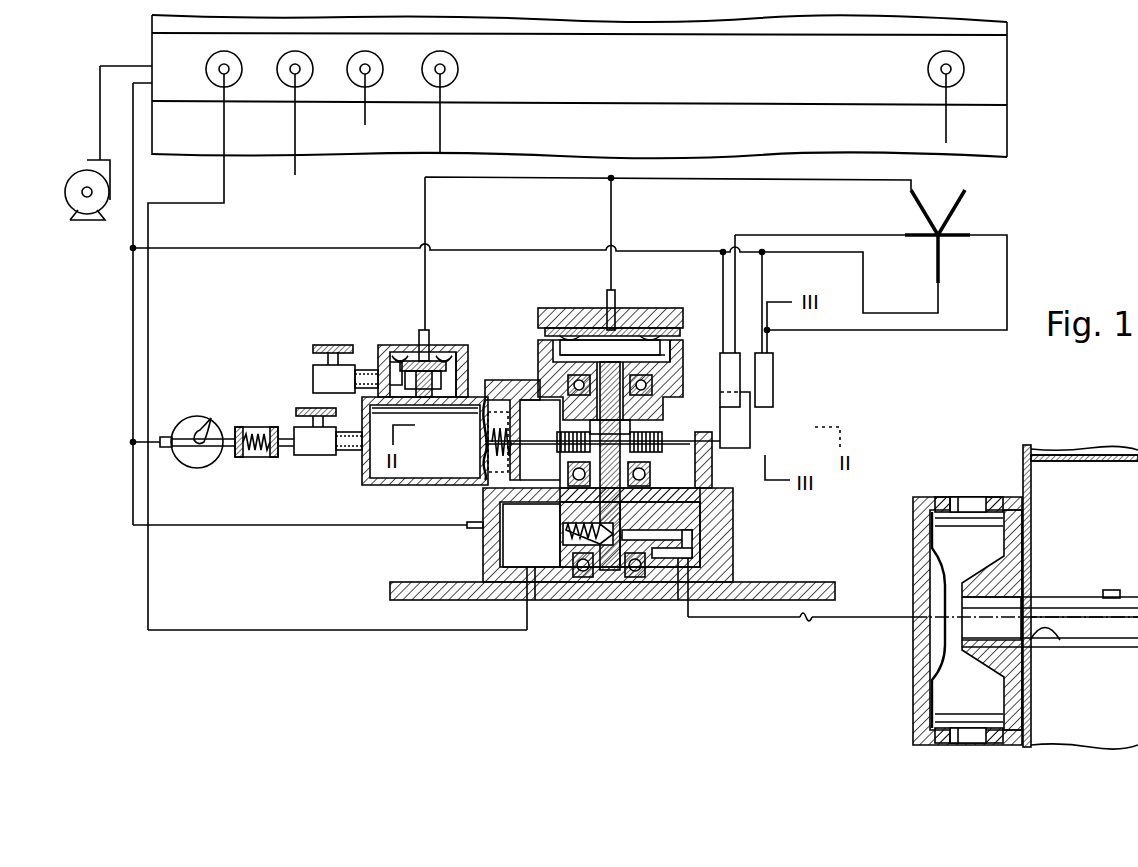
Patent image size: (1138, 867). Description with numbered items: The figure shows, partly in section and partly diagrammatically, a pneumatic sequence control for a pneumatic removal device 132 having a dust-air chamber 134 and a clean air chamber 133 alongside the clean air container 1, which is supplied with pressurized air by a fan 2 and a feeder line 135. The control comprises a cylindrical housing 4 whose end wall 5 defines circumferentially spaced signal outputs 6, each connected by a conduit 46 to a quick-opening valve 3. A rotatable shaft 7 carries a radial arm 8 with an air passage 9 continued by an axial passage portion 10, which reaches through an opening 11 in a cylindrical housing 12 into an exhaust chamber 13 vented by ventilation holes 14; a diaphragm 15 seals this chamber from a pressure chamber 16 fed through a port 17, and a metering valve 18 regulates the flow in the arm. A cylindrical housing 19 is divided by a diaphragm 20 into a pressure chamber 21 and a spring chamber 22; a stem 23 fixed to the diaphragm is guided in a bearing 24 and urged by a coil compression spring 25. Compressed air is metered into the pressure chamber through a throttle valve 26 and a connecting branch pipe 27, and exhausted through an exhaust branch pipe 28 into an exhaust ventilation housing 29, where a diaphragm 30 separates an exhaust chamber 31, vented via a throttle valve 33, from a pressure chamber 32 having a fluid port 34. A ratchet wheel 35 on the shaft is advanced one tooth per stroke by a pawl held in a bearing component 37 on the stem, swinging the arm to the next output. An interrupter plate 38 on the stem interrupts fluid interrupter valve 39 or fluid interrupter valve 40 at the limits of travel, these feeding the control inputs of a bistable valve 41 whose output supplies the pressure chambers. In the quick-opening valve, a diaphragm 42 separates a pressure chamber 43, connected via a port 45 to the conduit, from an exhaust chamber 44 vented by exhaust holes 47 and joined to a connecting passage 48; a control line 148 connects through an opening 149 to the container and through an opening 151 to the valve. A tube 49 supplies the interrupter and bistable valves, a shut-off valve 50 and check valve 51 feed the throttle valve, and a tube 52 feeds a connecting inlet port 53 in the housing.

The clean air container 1 is at (574, 73).
The fan 2 is at (87, 218).
The quick-opening valve 3 is at (240, 71).
The housing 4 is at (732, 508).
The end wall 5 is at (650, 601).
The signal outputs 6 is at (526, 596).
The rotatable shaft 7 is at (652, 474).
The radial arm 8 is at (716, 545).
The air passage 9 is at (710, 564).
The axial passage portion 10 is at (566, 468).
The opening 11 is at (665, 350).
The cylindrical housing 12 is at (545, 323).
The exhaust chamber 13 is at (582, 336).
The ventilation holes 14 is at (545, 370).
The diaphragm 15 is at (640, 340).
The pressure chamber 16 is at (675, 330).
The port 17 is at (616, 318).
The metering valve 18 is at (562, 530).
The cylindrical housing 19 is at (455, 486).
The diaphragm 20 is at (490, 442).
The pressure chamber 21 is at (415, 486).
The spring chamber 22 is at (483, 412).
The stem 23 is at (528, 390).
The bearing 24 is at (712, 470).
The coil compression spring 25 is at (484, 455).
The throttle valve 26 is at (315, 456).
The connecting branch pipe 27 is at (345, 453).
The exhaust branch pipe 28 is at (400, 365).
The exhaust ventilation housing 29 is at (470, 385).
The diaphragm 30 is at (448, 353).
The exhaust chamber 31 is at (378, 352).
The pressure chamber 32 is at (416, 356).
The throttle valve 33 is at (320, 370).
The fluid port 34 is at (429, 345).
The ratchet wheel 35 is at (650, 440).
The bearing component 37 is at (590, 440).
The interrupter plate 38 is at (740, 432).
The fluid interrupter valve 39 is at (765, 371).
The fluid interrupter valve 40 is at (727, 366).
The bistable valve 41 is at (988, 225).
The diaphragm 42 is at (940, 572).
The pressure chamber 43 is at (926, 660).
The exhaust chamber 44 is at (1000, 545).
The port 45 is at (920, 622).
The conduit 46 is at (764, 618).
The exhaust holes 47 is at (981, 499).
The connecting passage 48 is at (992, 640).
The tube 49 is at (205, 248).
The shut-off valve 50 is at (196, 468).
The check valve 51 is at (259, 458).
The tube 52 is at (328, 526).
The connecting inlet port 53 is at (476, 529).
The pneumatic removal device 132 is at (1010, 65).
The clean air chamber 133 is at (663, 34).
The dust-air chamber 134 is at (872, 138).
The feeder line 135 is at (119, 66).
The control line 148 is at (1108, 641).
The opening 149 is at (1112, 590).
The opening 151 is at (1046, 641).